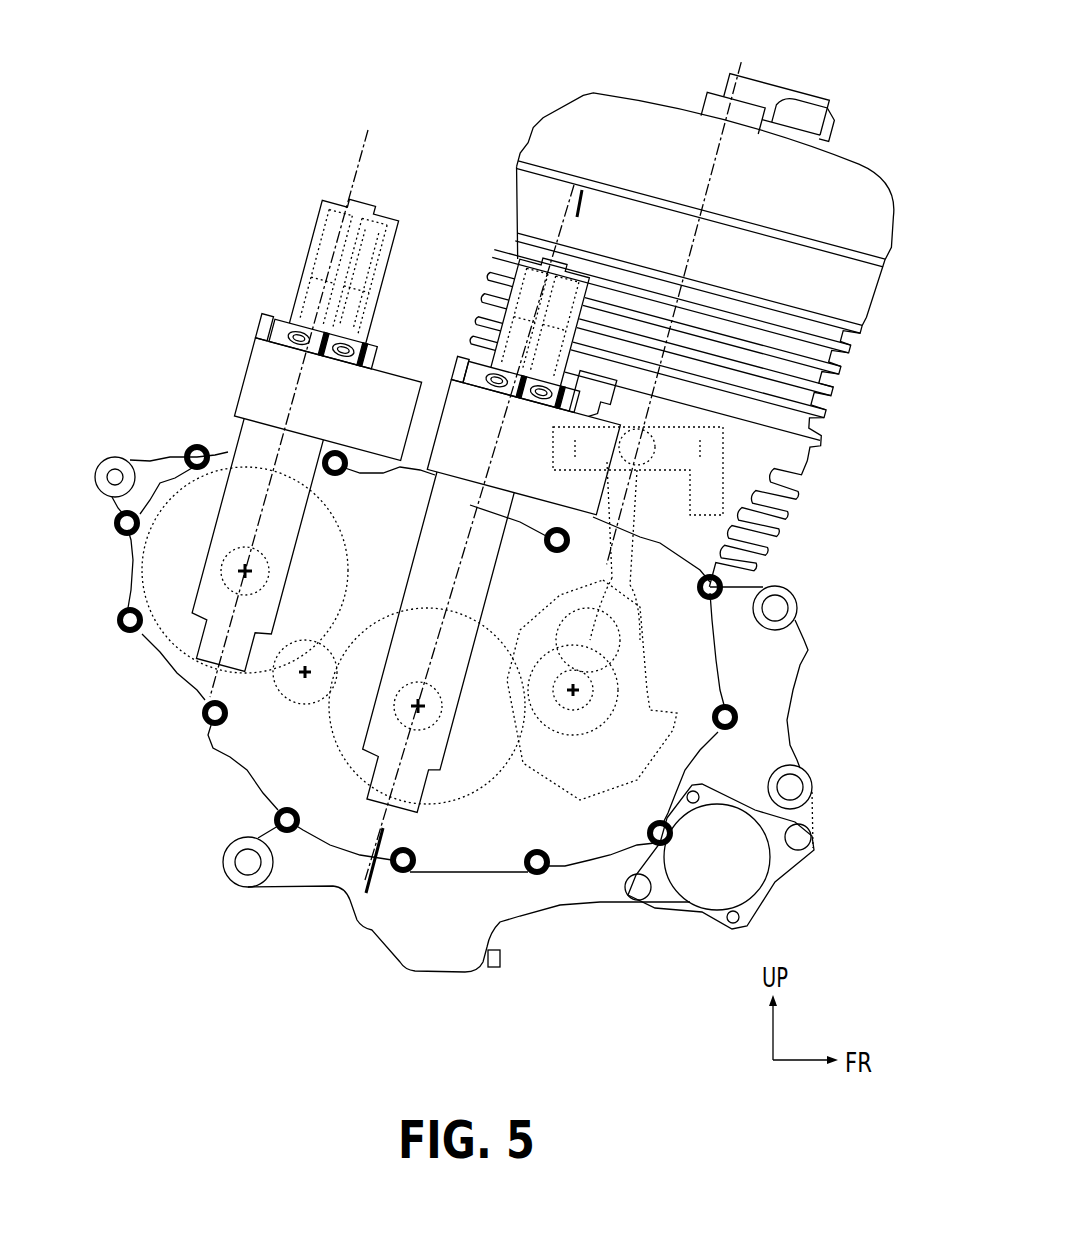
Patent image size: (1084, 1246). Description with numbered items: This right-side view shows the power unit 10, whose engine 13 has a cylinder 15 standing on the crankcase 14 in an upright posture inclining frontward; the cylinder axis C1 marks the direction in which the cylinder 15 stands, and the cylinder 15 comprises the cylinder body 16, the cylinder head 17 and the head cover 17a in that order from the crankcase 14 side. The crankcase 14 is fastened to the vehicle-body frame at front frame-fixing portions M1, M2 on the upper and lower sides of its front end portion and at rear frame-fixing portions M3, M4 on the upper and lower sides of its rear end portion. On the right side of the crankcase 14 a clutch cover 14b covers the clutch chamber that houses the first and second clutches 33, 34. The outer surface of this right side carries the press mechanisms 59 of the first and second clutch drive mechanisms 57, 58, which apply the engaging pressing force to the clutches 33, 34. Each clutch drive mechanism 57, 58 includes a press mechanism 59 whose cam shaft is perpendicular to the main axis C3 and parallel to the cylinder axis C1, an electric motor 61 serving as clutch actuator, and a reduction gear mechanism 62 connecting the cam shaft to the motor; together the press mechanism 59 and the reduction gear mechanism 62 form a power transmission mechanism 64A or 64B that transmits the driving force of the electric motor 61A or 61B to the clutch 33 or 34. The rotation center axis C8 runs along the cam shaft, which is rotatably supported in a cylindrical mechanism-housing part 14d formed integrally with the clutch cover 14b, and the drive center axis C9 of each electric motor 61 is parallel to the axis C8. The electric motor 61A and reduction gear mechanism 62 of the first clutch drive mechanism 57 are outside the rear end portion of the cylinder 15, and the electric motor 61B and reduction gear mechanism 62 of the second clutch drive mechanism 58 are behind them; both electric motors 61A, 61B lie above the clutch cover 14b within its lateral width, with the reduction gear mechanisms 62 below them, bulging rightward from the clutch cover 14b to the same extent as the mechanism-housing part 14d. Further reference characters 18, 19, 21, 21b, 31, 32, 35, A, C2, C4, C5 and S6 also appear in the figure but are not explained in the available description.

The power unit 10 is at (502, 517).
The engine 13 is at (810, 639).
The crankcase 14 is at (398, 876).
The clutch cover 14b is at (263, 780).
The mechanism-housing part 14d is at (277, 540).
The cylinder 15 is at (806, 524).
The cylinder body 16 is at (790, 518).
The cylinder head 17 is at (840, 370).
The head cover 17a is at (858, 172).
The piston 18 is at (720, 430).
The connecting rod 19 is at (657, 532).
The crankshaft 21 is at (555, 721).
The crank gear 21b is at (537, 780).
The gear 31 is at (397, 707).
The gear 32 is at (217, 577).
The first clutch 33 is at (320, 824).
The second clutch 34 is at (163, 657).
The idle gear 35 is at (303, 677).
The first clutch drive mechanism 57 is at (503, 265).
The second clutch drive mechanism 58 is at (318, 194).
The press mechanism 59 is at (250, 438).
The electric motor 61 is at (514, 277).
The electric motor of first clutch drive mechanism 61A is at (590, 258).
The electric motor of second clutch drive mechanism 61B is at (398, 223).
The reduction gear mechanism 62 is at (258, 363).
The power transmission mechanism 64A is at (483, 327).
The power transmission mechanism 64B is at (395, 475).
The viewing direction A is at (500, 65).
The cylinder axis C1 is at (710, 175).
The crankshaft axis C2 is at (575, 693).
The main axis C3 is at (417, 705).
The gear axis C4 is at (240, 567).
The idle gear axis C5 is at (297, 712).
The rotation center axis C8 is at (310, 525).
The drive center axis C9 is at (362, 160).
The front frame-fixing portion M1 is at (793, 593).
The front frame-fixing portion M2 is at (813, 787).
The rear frame-fixing portion M3 is at (110, 457).
The rear frame-fixing portion M4 is at (230, 877).
The section line S6 is at (570, 200).